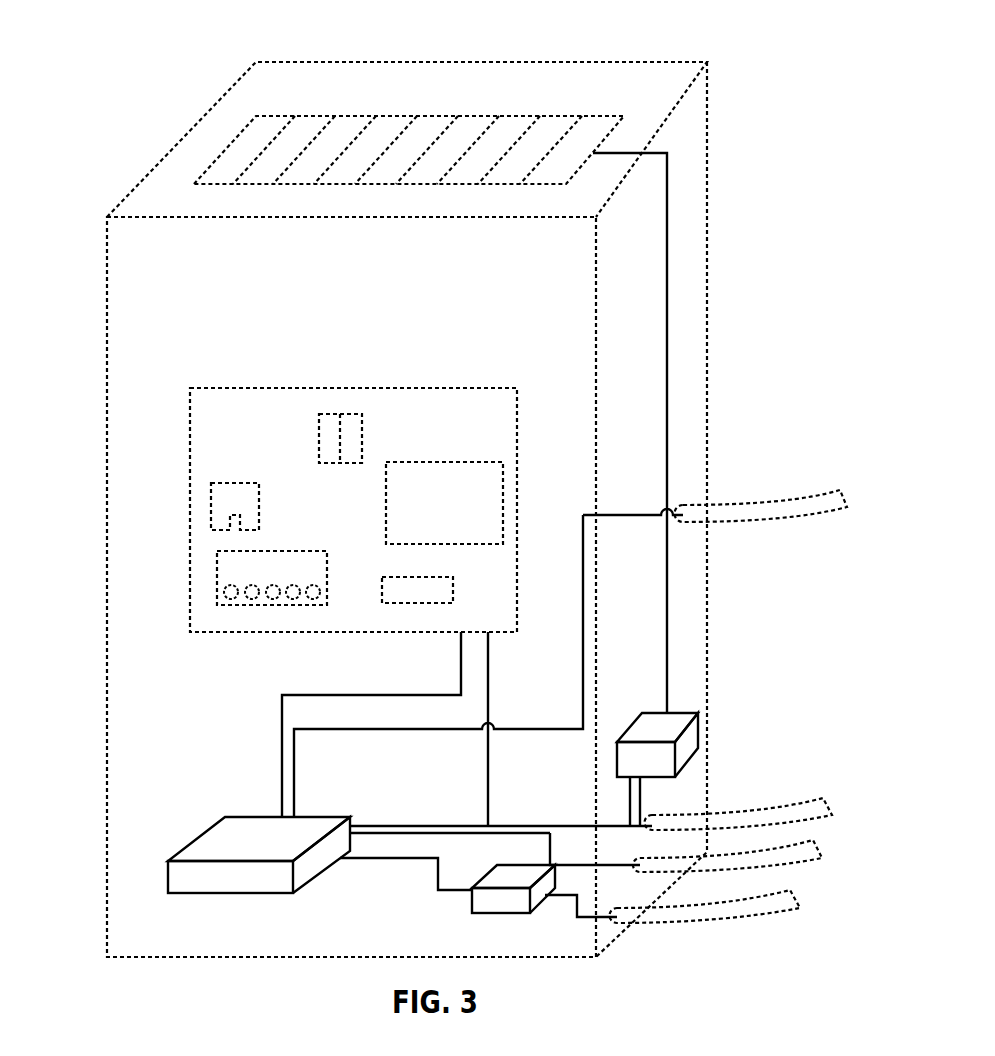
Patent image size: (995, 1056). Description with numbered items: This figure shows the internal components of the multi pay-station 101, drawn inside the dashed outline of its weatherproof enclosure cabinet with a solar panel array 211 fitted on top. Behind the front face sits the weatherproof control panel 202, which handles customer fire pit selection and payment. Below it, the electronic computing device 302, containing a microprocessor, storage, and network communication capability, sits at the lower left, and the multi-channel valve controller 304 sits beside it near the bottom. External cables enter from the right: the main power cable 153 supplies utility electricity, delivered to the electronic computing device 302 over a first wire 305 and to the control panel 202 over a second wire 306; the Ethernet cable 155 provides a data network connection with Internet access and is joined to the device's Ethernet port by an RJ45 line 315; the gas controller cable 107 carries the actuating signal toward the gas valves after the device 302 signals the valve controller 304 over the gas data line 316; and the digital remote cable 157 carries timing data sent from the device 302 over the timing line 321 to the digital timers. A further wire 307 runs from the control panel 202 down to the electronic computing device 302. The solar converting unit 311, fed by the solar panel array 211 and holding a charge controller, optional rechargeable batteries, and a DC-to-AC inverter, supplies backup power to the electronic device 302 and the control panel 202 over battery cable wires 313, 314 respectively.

The multi pay-station 101 is at (141, 60).
The solar panel array 211 is at (577, 108).
The control panel 202 is at (391, 388).
The solar converting unit 311 is at (677, 718).
The digital remote cable 157 is at (810, 513).
The wire 307 is at (282, 727).
The timing line 321 is at (422, 729).
The second wire 306 is at (488, 697).
The electronic computing device 302 is at (312, 812).
The first wire 305 is at (398, 823).
The battery cable wire 313 is at (625, 792).
The battery cable wire 314 is at (642, 797).
The main power cable 153 is at (750, 817).
The RJ45 line 315 is at (549, 838).
The Ethernet cable 155 is at (805, 858).
The gas data line 316 is at (433, 875).
The multi-channel valve controller 304 is at (502, 915).
The gas controller cable 107 is at (758, 917).